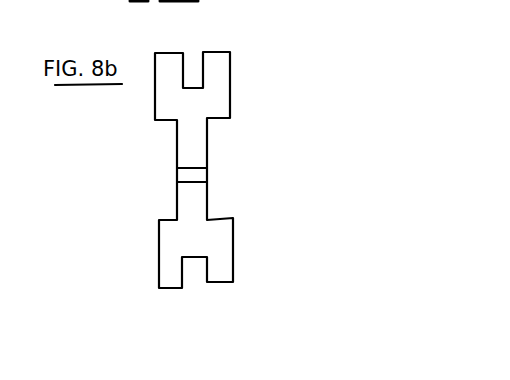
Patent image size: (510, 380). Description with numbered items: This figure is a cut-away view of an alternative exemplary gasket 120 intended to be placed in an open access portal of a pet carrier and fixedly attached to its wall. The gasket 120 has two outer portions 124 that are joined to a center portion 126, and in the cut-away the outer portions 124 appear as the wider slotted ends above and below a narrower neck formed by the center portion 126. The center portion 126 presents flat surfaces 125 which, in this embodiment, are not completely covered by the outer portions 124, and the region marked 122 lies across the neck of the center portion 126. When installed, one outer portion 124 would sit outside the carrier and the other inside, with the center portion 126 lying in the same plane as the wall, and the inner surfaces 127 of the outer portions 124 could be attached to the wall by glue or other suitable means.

The gasket 120 is at (245, 82).
The web / bridge portion 122 is at (204, 178).
The outer portions 124 is at (217, 69).
The flat surfaces 125 is at (210, 152).
The center portion 126 is at (198, 144).
The inner surfaces 127 is at (200, 273).